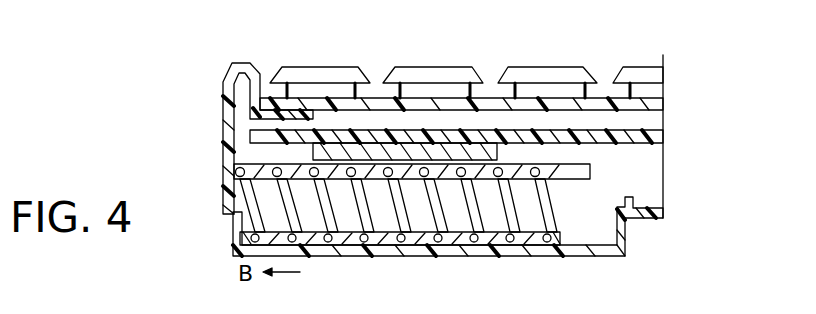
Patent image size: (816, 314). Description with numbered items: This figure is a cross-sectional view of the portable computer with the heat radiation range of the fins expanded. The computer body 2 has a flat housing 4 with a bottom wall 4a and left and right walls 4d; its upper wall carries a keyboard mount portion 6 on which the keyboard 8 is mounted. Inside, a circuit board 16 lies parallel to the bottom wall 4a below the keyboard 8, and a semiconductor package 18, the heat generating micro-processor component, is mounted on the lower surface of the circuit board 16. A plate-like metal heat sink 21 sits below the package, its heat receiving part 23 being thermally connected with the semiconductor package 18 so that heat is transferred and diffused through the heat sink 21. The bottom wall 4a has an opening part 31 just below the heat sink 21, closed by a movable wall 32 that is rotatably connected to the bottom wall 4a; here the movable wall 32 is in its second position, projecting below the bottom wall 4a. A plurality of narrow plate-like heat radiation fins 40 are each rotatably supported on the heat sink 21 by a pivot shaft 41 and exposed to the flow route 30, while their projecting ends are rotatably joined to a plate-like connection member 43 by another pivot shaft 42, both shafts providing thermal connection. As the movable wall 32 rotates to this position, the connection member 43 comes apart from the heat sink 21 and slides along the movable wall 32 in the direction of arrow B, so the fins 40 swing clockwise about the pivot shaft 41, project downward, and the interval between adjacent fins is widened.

The computer body 2 is at (678, 68).
The housing 4 is at (222, 86).
The bottom wall 4a is at (644, 219).
The left and right walls 4d is at (222, 134).
The keyboard mount portion 6 is at (266, 82).
The keyboard 8 is at (646, 67).
The circuit board 16 is at (653, 130).
The semiconductor package 18 is at (465, 156).
The heat sink 21 is at (592, 172).
The heat receiving part 23 is at (413, 158).
The flow route 30 is at (571, 197).
The opening part 31 is at (627, 200).
The movable wall 32 is at (373, 257).
The heat radiation fins 40 is at (318, 218).
The pivot shaft 41 is at (352, 168).
The pivot shaft 42 is at (410, 236).
The connection member 43 is at (486, 240).